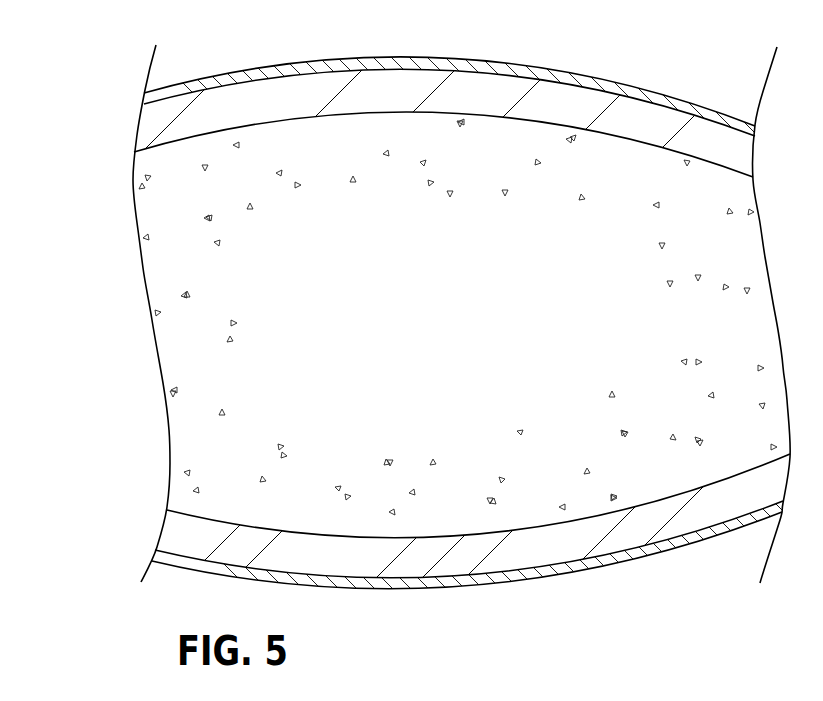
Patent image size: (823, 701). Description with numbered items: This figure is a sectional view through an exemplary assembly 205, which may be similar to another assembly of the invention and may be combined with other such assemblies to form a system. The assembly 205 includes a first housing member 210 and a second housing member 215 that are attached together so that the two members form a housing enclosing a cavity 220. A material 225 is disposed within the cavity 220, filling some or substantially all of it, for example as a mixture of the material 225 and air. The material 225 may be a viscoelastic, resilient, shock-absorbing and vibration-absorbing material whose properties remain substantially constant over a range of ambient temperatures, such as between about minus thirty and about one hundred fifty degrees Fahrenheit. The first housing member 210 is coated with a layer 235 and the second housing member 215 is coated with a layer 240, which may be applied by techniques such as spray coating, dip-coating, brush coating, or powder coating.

The assembly 205 is at (682, 68).
The first housing member 210 is at (363, 82).
The second housing member 215 is at (443, 560).
The cavity 220 is at (126, 267).
The material 225 is at (190, 382).
The layer 235 is at (560, 72).
The layer 240 is at (560, 572).